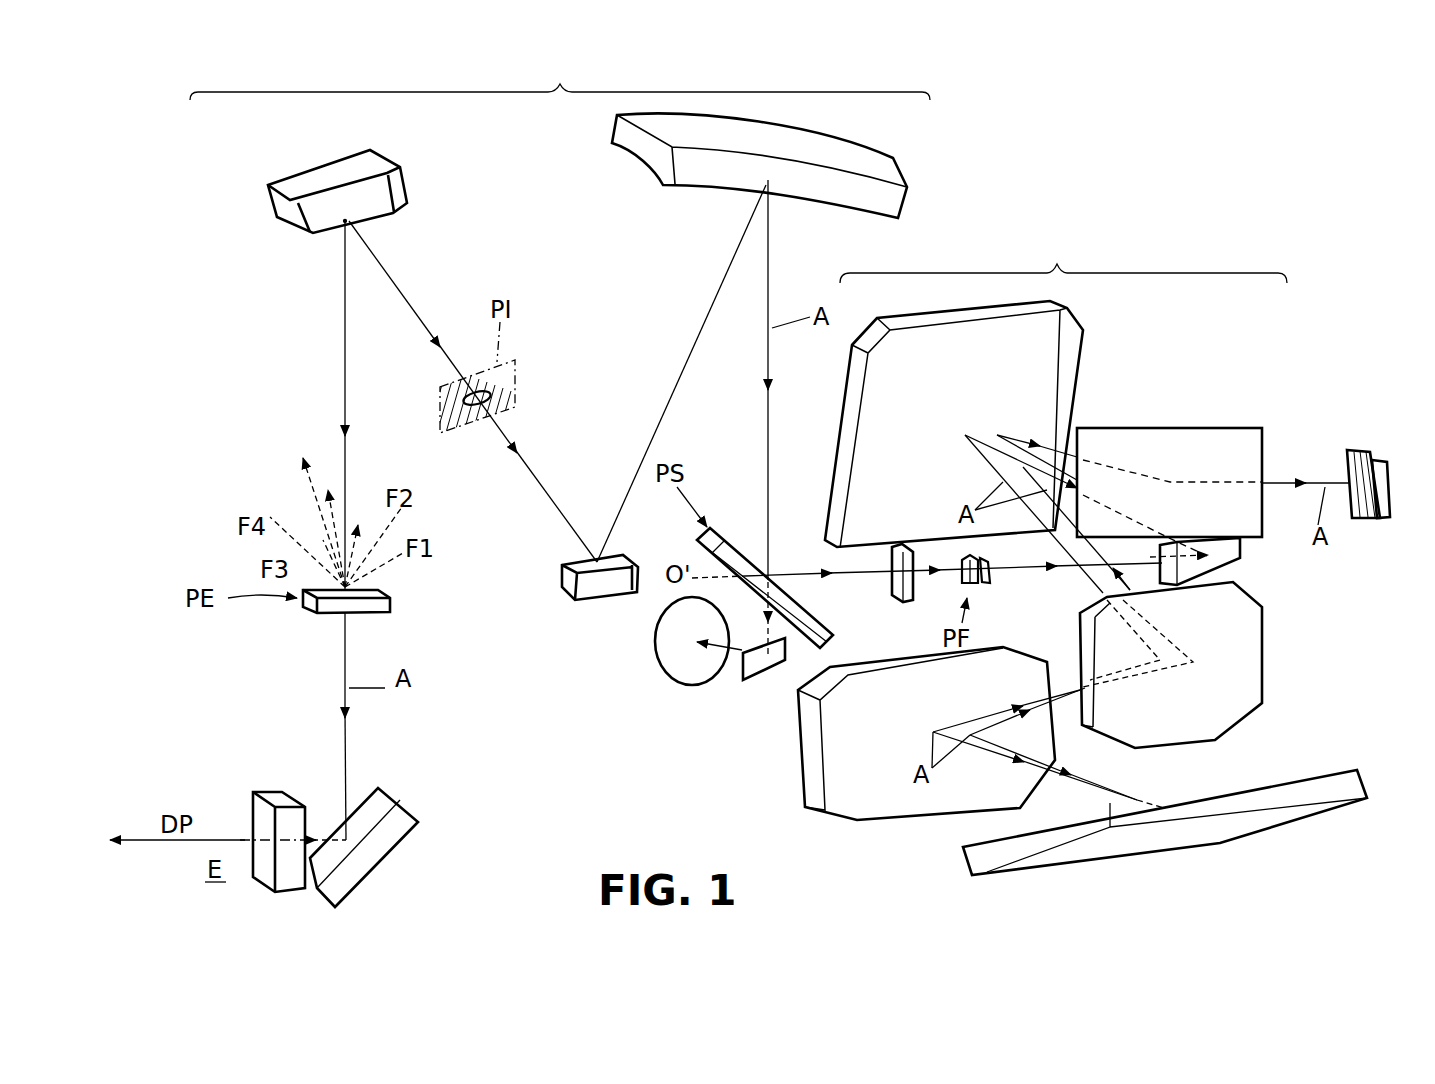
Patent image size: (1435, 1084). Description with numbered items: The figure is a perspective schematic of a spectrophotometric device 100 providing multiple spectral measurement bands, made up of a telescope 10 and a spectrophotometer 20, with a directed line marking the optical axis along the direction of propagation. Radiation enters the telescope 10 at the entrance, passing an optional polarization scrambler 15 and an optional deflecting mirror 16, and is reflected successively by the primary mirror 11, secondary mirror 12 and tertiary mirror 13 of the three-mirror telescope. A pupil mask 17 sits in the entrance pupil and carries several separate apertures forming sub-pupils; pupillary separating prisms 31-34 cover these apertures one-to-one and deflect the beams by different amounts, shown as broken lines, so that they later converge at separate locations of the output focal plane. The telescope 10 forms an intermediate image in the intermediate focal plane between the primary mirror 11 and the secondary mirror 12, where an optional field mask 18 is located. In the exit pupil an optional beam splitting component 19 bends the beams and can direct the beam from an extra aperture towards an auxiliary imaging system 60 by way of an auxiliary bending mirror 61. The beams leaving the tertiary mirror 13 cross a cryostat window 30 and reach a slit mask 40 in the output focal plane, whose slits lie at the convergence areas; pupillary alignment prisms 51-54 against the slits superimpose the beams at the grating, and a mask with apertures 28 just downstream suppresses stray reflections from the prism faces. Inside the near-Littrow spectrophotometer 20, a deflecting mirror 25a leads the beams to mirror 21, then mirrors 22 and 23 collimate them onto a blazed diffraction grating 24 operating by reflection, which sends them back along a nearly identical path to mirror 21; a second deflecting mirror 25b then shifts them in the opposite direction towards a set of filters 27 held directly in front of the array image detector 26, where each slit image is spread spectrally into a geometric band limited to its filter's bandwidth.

The telescope 10 is at (560, 78).
The primary mirror 11 is at (327, 173).
The secondary mirror 12 is at (602, 583).
The tertiary mirror 13 is at (885, 170).
The polarization scrambler 15 is at (263, 870).
The deflecting mirror 16 is at (368, 853).
The pupil mask 17 is at (388, 613).
The field mask 18 is at (477, 418).
The beam splitting component 19 is at (738, 547).
The spectrophotometer 20 is at (1063, 259).
The mirror 21 is at (1057, 375).
The mirror 22 is at (1243, 667).
The mirror 23 is at (897, 807).
The blazed diffraction grating 24 is at (1173, 835).
The deflecting mirror 25a is at (1243, 553).
The deflecting mirror 25b is at (1203, 440).
The array image detector 26 is at (1387, 520).
The set of filters 27 is at (1363, 520).
The mask with apertures 28 is at (988, 577).
The cryostat window 30 is at (897, 598).
The pupillary separating prisms 31-34 is at (383, 590).
The slit mask 40 is at (960, 580).
The pupillary alignment prisms 51-54 is at (978, 582).
The auxiliary imaging system 60 is at (683, 668).
The auxiliary bending mirror 61 is at (745, 673).
The spectrophotometric device 100 is at (1262, 168).